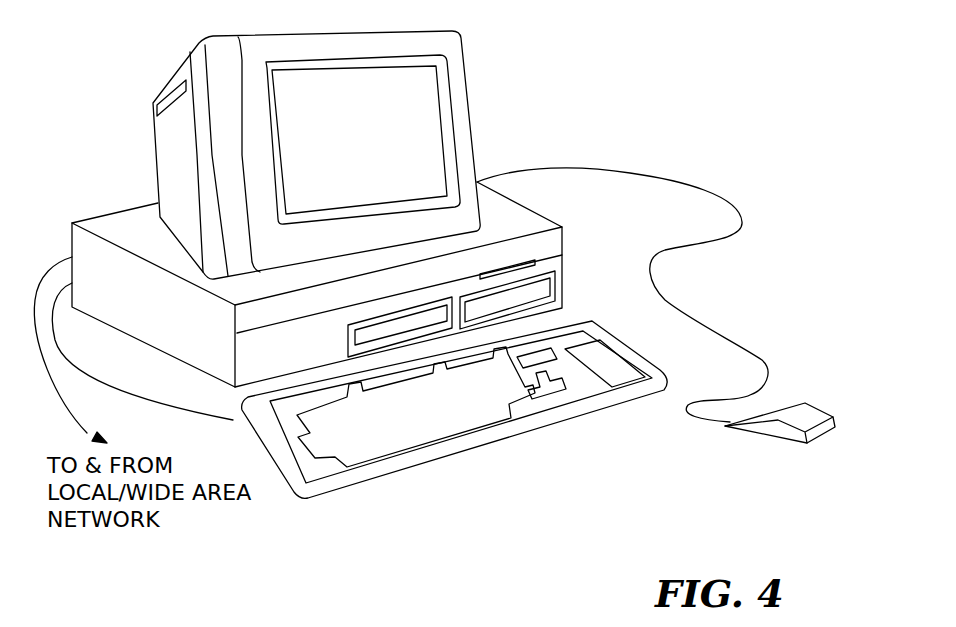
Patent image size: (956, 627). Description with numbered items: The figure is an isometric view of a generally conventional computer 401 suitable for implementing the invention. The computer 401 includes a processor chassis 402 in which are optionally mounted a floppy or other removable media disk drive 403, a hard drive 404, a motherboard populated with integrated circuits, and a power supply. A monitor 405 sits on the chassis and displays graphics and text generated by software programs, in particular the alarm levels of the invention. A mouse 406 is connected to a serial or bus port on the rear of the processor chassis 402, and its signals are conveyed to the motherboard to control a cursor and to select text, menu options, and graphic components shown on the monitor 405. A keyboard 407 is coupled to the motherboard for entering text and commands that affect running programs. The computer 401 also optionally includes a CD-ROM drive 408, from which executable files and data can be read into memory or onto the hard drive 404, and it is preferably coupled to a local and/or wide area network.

The computer 401 is at (456, 290).
The processor chassis 402 is at (362, 283).
The floppy or other removable media disk drive 403 is at (508, 264).
The hard drive 404 is at (531, 292).
The monitor 405 is at (467, 97).
The mouse 406 is at (810, 443).
The keyboard 407 is at (557, 426).
The compact disk-read only memory (CD-ROM) drive 408 is at (347, 346).